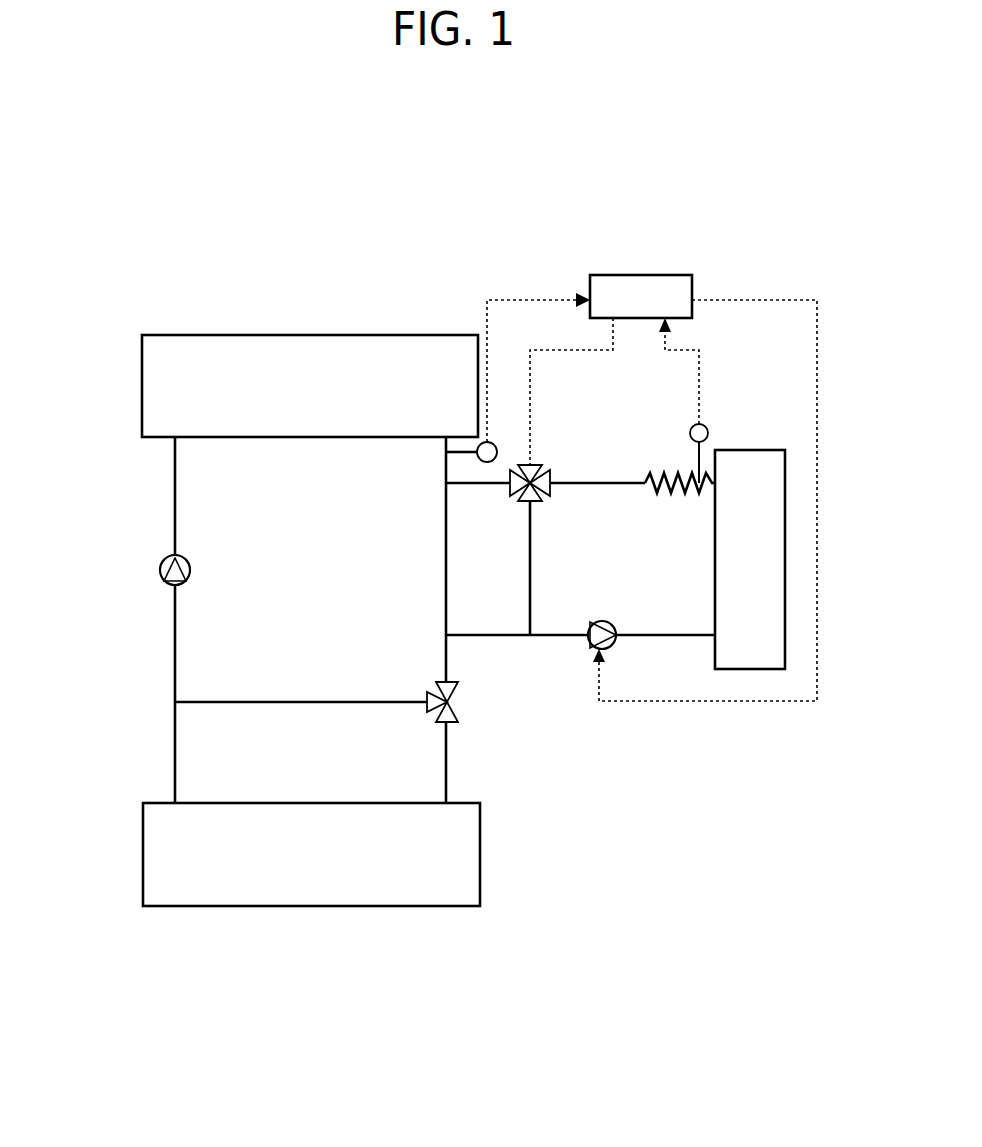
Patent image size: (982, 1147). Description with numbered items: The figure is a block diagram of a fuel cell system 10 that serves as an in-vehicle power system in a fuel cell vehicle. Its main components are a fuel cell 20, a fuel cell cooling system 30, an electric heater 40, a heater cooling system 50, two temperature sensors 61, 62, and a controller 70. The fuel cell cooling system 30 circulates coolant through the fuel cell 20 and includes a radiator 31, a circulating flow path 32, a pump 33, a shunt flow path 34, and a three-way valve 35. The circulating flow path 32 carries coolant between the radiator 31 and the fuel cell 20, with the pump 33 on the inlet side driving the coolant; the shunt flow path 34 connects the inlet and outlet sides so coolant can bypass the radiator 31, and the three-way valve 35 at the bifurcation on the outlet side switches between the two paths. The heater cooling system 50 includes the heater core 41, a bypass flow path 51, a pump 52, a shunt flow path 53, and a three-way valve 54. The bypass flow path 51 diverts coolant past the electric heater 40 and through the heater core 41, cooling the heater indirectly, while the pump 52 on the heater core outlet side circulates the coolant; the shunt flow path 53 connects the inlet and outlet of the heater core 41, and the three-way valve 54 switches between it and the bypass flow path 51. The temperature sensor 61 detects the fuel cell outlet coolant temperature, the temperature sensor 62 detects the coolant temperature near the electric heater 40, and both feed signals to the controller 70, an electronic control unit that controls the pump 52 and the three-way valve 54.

The fuel cell system 10 is at (228, 239).
The fuel cell 20 is at (368, 334).
The fuel cell cooling system 30 is at (148, 519).
The radiator 31 is at (258, 906).
The circulating flow path 32 is at (175, 645).
The pump 33 is at (163, 580).
The shunt flow path 34 is at (280, 702).
The three-way valve 35 is at (450, 705).
The electric heater 40 is at (680, 472).
The heater core 41 is at (785, 530).
The heater cooling system 50 is at (650, 719).
The bypass flow path 51 is at (685, 637).
The pump 52 is at (605, 620).
The shunt flow path 53 is at (535, 575).
The three-way valve 54 is at (546, 468).
The temperature sensor 61 is at (491, 462).
The temperature sensor 62 is at (706, 427).
The controller 70 is at (643, 275).